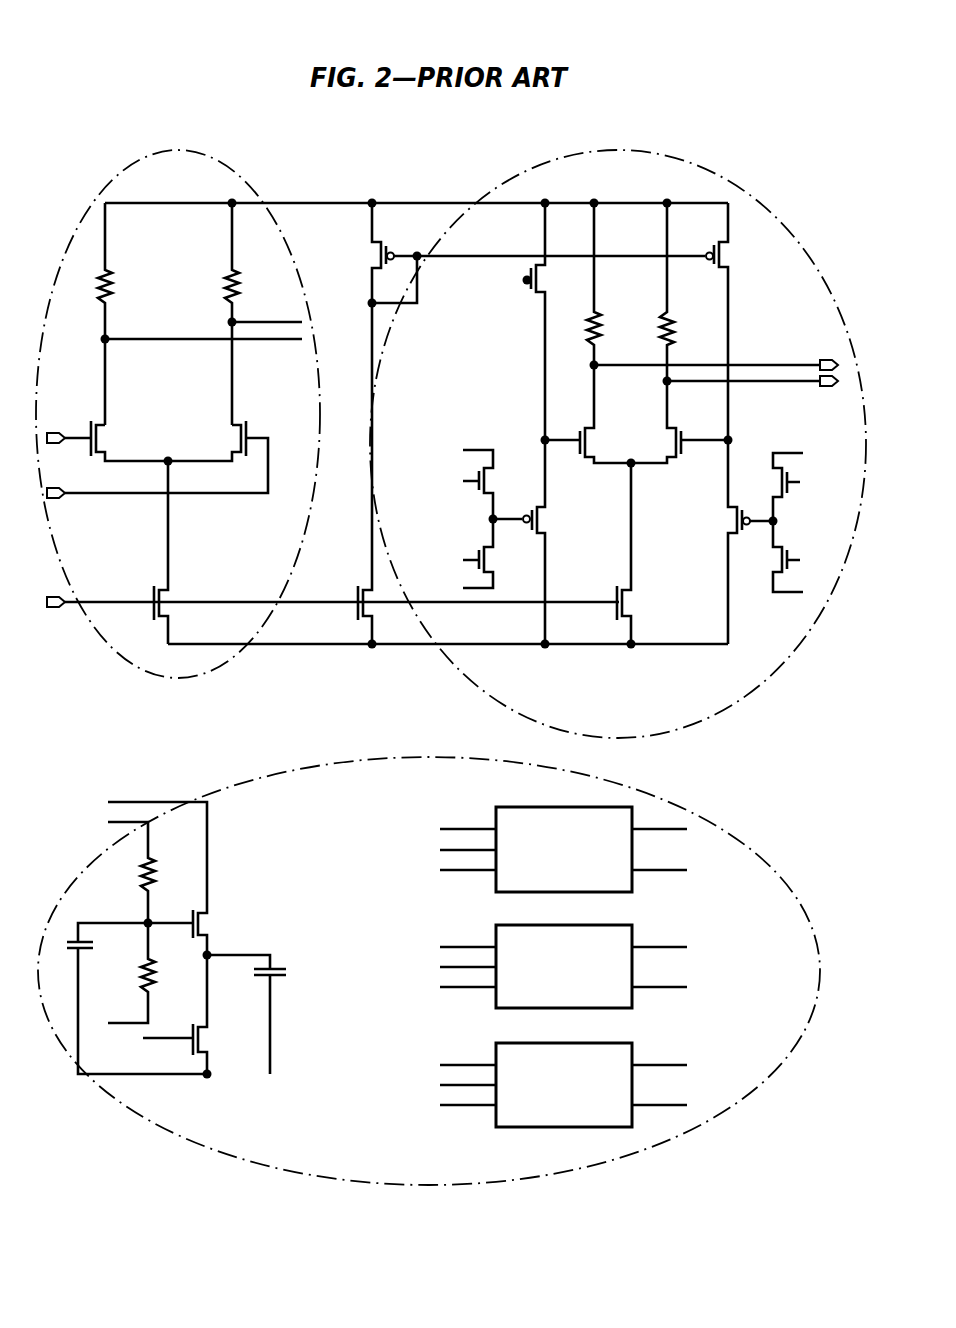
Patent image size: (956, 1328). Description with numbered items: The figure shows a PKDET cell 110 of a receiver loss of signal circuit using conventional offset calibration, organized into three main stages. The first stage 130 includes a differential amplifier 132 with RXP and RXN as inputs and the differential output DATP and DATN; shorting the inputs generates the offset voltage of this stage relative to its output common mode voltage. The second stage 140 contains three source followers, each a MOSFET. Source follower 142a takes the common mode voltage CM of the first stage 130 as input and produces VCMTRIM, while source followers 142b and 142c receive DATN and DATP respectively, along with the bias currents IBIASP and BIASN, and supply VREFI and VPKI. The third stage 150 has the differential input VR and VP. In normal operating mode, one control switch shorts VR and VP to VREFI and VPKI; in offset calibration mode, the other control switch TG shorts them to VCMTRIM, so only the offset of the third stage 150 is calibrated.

The PKDET cell 110 is at (138, 66).
The first stage 130 is at (218, 166).
The differential amplifier 132 is at (187, 442).
The second stage 140 is at (745, 852).
The source follower 142a is at (540, 851).
The source follower 142b is at (541, 969).
The source follower 142c is at (535, 1087).
The third stage 150 is at (703, 167).